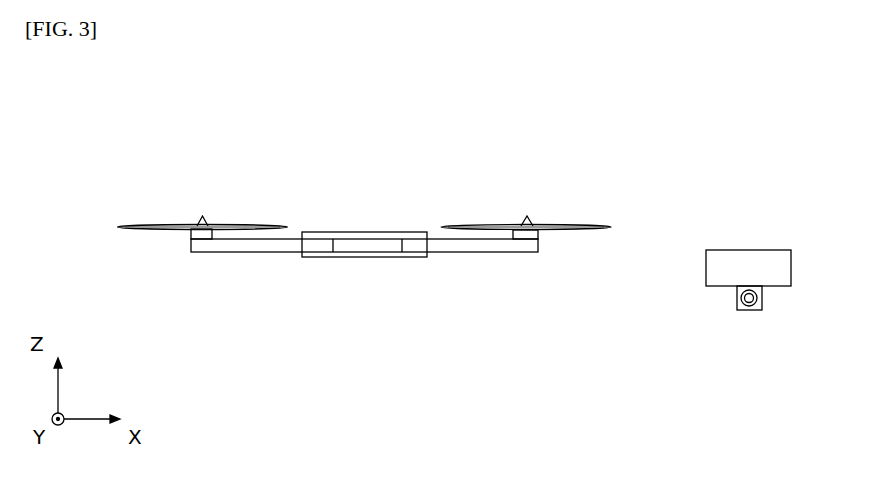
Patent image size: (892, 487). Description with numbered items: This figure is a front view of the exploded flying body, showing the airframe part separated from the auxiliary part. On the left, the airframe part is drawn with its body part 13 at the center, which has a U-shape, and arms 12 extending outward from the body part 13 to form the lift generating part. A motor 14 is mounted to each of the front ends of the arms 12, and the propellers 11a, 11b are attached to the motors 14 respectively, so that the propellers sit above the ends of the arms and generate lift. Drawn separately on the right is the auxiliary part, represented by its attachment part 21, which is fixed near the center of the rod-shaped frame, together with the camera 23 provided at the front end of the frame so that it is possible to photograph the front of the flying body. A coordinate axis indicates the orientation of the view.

The propeller 11a is at (201, 214).
The propeller 11b is at (527, 215).
The arm 12 is at (483, 252).
The body part 13 is at (358, 232).
The motor 14 is at (192, 232).
The attachment part 21 is at (745, 266).
The camera 23 is at (762, 304).